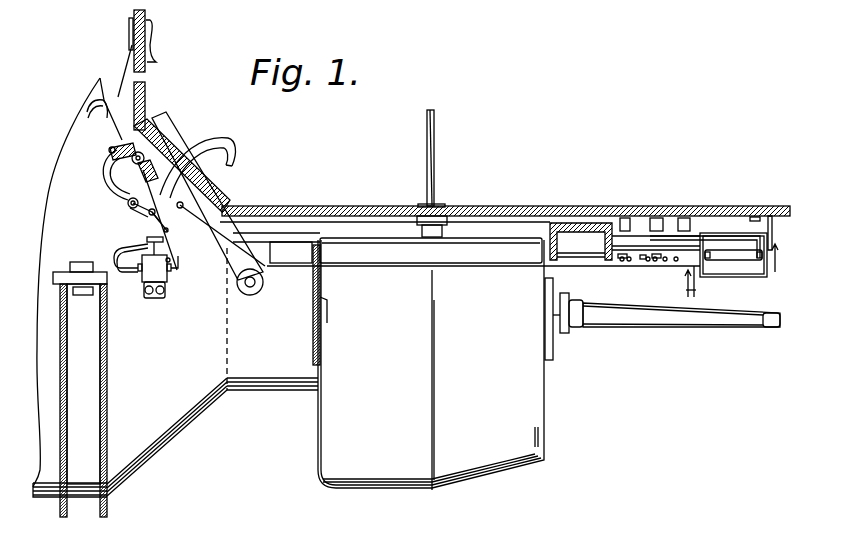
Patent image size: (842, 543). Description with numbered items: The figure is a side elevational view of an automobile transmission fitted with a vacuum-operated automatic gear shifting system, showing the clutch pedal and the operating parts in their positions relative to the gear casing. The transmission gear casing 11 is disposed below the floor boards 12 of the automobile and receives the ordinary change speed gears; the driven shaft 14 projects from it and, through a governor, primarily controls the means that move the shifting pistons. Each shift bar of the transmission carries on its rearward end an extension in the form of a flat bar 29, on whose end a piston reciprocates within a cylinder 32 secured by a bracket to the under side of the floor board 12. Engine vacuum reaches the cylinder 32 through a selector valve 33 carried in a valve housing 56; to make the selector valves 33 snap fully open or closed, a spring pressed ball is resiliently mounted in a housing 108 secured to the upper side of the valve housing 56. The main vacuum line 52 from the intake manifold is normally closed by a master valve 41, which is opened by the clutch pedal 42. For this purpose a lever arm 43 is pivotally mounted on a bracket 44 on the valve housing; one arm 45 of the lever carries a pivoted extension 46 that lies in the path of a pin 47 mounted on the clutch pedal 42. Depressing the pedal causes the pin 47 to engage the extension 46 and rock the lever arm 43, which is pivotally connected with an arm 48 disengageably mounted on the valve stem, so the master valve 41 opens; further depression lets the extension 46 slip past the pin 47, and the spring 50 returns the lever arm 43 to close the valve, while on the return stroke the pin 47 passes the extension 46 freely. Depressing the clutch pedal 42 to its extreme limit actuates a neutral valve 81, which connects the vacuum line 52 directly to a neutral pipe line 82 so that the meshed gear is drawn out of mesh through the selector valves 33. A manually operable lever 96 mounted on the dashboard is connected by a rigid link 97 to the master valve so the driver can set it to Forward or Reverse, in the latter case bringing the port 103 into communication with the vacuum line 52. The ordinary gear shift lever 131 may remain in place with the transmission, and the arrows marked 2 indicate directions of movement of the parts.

The direction arrows 2 is at (730, 273).
The transmission gear casing 11 is at (533, 434).
The floor boards 12 is at (490, 207).
The driven shaft 14 is at (767, 328).
The flat bar 29 is at (641, 262).
The cylinder 32 is at (757, 270).
The selector valve 33 is at (618, 261).
The master valve 41 is at (112, 150).
The clutch pedal 42 is at (212, 136).
The lever arm 43 is at (118, 196).
The bracket 44 is at (128, 206).
The arm 45 is at (140, 225).
The extension 46 is at (160, 224).
The pin 47 is at (192, 188).
The arm 48 is at (110, 162).
The spring 50 is at (95, 212).
The main vacuum line 52 is at (88, 112).
The valve housing 56 is at (638, 234).
The neutral valve 81 is at (146, 298).
The neutral pipe line 82 is at (190, 253).
The manually operable lever 96 is at (152, 30).
The rigid link 97 is at (118, 95).
The port 103 is at (404, 268).
The housing 108 is at (667, 233).
The gear shift lever 131 is at (435, 176).